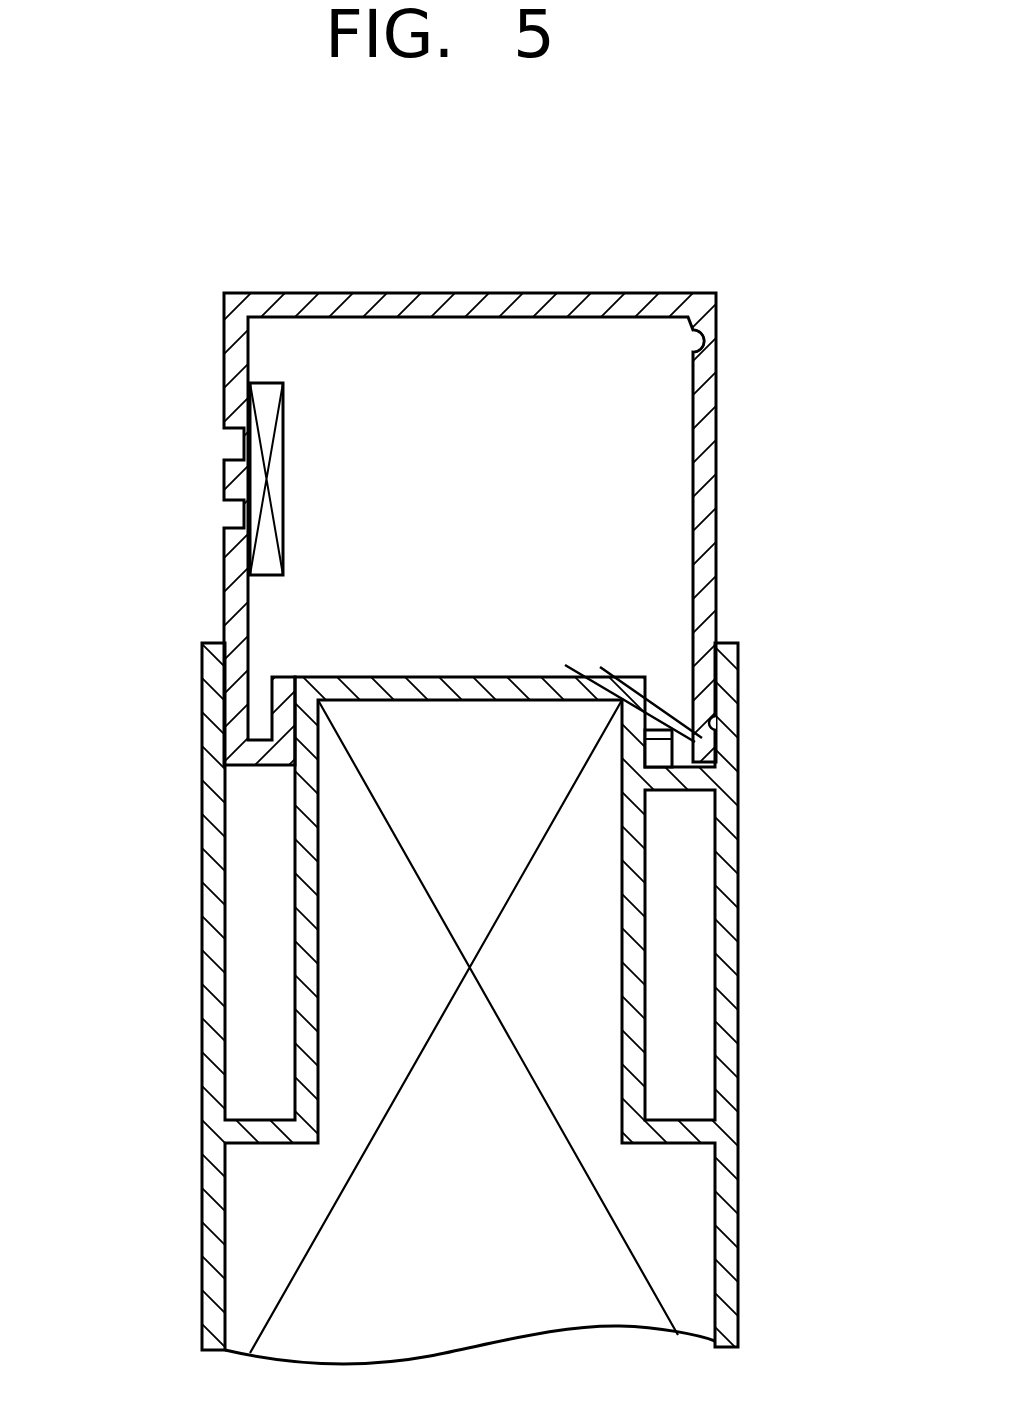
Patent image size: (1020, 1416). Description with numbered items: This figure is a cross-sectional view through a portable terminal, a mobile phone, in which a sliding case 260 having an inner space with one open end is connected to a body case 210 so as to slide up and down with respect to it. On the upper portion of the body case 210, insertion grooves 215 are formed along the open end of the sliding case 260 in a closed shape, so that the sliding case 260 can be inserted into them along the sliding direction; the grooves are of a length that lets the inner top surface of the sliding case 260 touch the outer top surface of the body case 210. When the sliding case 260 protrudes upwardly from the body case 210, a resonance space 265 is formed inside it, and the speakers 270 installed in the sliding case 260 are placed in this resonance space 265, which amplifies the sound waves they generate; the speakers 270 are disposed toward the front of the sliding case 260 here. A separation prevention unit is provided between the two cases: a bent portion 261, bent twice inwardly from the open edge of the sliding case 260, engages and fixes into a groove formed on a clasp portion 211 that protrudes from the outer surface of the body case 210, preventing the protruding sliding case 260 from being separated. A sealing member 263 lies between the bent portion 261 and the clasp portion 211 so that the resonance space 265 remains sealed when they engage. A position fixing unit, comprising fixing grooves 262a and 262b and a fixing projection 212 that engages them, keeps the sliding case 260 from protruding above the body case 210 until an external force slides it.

The body case 210 is at (738, 1180).
The clasp portion 211 is at (665, 674).
The fixing projection 212 is at (650, 675).
The insertion grooves 215 is at (258, 900).
The sliding case 260 is at (472, 300).
The bent portion 261 is at (665, 790).
The fixing groove 262a is at (704, 346).
The fixing groove 262b is at (713, 725).
The sealing member 263 is at (658, 745).
The resonance space 265 is at (502, 468).
The speakers 270 is at (287, 470).